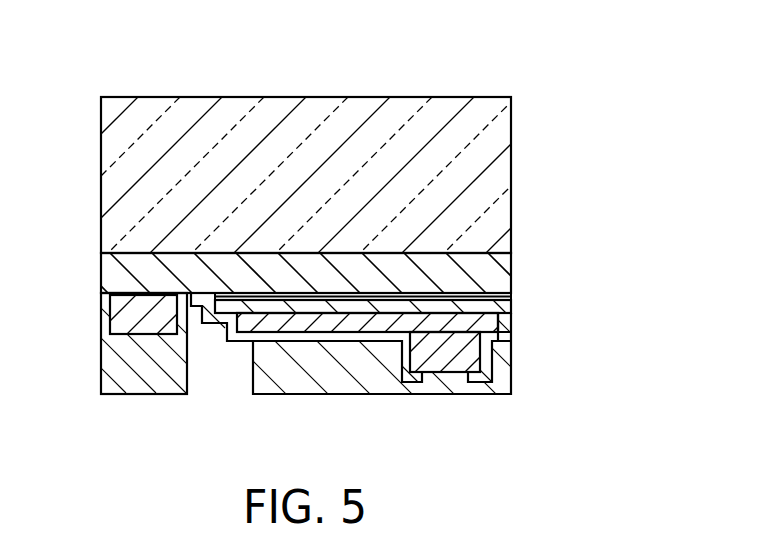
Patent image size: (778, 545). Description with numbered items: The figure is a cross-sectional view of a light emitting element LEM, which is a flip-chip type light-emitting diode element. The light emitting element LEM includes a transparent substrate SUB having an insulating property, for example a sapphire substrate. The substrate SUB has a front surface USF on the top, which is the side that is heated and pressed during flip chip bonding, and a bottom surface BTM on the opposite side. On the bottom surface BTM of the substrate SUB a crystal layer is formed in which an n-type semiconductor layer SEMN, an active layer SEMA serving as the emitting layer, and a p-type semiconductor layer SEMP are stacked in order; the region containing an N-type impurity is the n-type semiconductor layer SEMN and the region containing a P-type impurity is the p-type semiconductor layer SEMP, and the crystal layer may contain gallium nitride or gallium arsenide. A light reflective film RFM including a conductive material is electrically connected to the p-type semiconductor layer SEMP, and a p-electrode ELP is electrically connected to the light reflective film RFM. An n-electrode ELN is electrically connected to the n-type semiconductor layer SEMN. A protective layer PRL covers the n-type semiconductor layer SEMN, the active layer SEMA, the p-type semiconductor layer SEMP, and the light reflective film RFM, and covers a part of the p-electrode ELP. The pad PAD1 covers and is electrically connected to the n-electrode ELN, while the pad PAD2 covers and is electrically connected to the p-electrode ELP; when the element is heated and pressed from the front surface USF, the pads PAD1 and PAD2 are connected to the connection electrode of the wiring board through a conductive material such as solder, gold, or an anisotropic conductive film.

The light emitting element LEM is at (540, 82).
The substrate SUB is at (504, 169).
The front surface USF is at (129, 97).
The bottom surface BTM is at (113, 256).
The n-type semiconductor layer SEMN is at (500, 265).
The active layer SEMA is at (468, 293).
The p-type semiconductor layer SEMP is at (500, 307).
The protective layer PRL is at (512, 334).
The light reflective film RFM is at (367, 334).
The p-electrode ELP is at (448, 353).
The n-electrode ELN is at (125, 312).
The pad PAD1 is at (143, 386).
The pad PAD2 is at (284, 386).